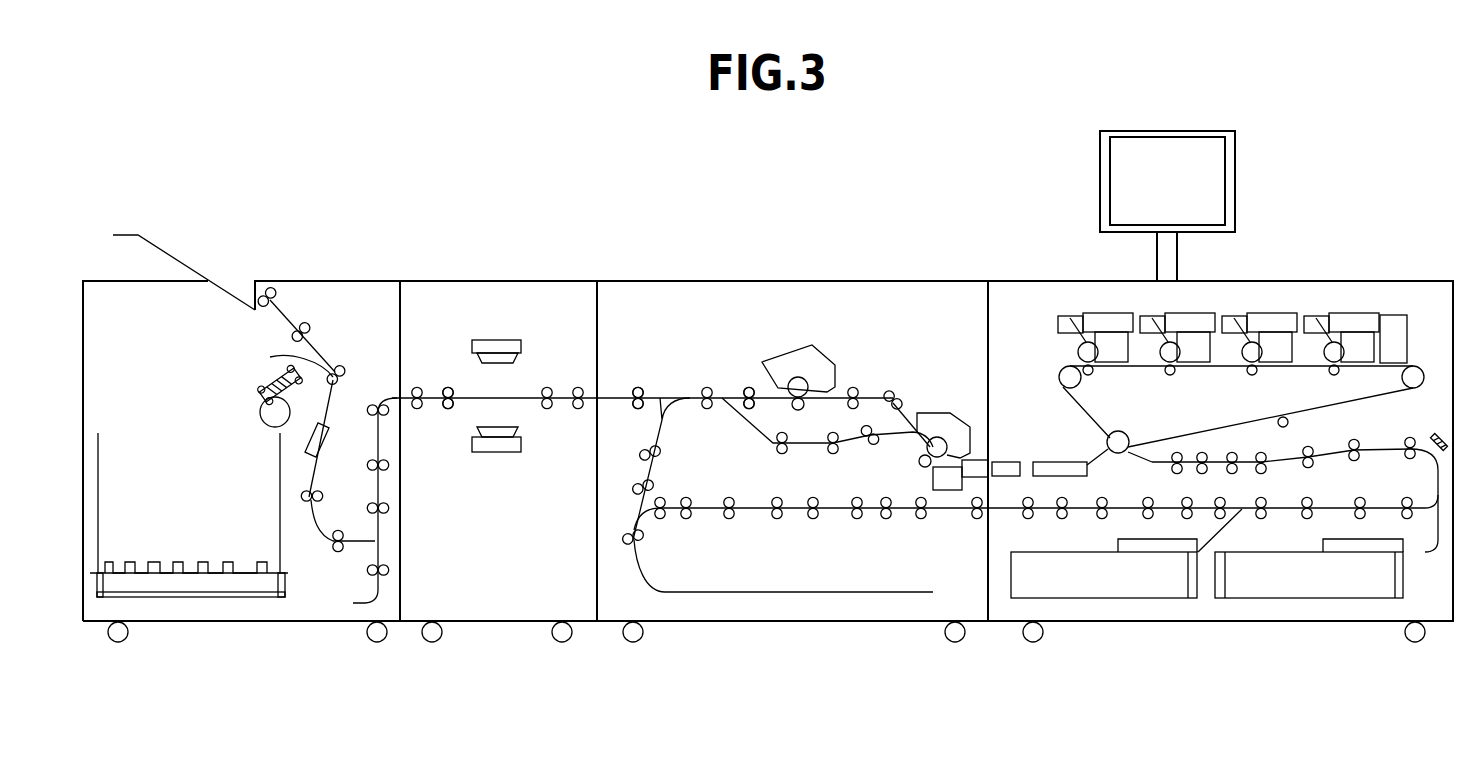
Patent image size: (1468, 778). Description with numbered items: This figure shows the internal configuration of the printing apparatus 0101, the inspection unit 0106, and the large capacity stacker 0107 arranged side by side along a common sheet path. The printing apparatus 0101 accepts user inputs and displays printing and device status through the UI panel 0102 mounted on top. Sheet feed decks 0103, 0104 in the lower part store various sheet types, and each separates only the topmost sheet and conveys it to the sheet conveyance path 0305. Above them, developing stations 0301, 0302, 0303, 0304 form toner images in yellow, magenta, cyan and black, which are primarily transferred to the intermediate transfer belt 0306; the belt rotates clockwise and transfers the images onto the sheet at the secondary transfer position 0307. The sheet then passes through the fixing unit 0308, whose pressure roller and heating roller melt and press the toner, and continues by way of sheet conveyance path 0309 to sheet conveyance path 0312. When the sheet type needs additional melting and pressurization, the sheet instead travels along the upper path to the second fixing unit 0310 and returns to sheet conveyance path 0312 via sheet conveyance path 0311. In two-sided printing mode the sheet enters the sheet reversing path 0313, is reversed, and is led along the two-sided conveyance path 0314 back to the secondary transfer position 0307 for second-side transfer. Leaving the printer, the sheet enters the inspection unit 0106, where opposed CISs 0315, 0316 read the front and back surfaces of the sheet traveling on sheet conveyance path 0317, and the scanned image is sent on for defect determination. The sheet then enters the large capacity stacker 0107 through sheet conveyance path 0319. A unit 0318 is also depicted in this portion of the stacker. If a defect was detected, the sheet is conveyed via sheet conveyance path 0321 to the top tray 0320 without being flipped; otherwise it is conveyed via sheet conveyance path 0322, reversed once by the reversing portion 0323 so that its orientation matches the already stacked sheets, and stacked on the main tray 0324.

The printing apparatus 0101 is at (797, 623).
The UI panel 0102 is at (1163, 150).
The sheet feed deck 0103 is at (1118, 600).
The sheet feed deck 0104 is at (1318, 600).
The inspection unit 0106 is at (500, 623).
The large capacity stacker 0107 is at (310, 623).
The developing station 0301 is at (1348, 313).
The developing station 0302 is at (1272, 313).
The developing station 0303 is at (1190, 313).
The developing station 0304 is at (1108, 313).
The sheet conveyance path 0305 is at (1387, 447).
The intermediate transfer belt 0306 is at (1188, 443).
The secondary transfer position 0307 is at (1107, 446).
The fixing unit 0308 is at (940, 412).
The sheet conveyance path 0309 is at (747, 423).
The second fixing unit 0310 is at (793, 352).
The sheet conveyance path 0311 is at (735, 397).
The sheet conveyance path 0312 is at (622, 396).
The sheet reversing path 0313 is at (725, 591).
The two-sided conveyance path 0314 is at (947, 511).
The CIS 0315 is at (500, 340).
The CIS 0316 is at (500, 452).
The sheet conveyance path 0317 is at (467, 395).
The relay conveying unit 0318 is at (337, 281).
The sheet conveyance path 0319 is at (320, 528).
The top tray 0320 is at (177, 253).
The sheet conveyance path 0321 is at (285, 302).
The sheet conveyance path 0322 is at (270, 357).
The reversing portion 0323 is at (367, 595).
The main tray 0324 is at (189, 515).